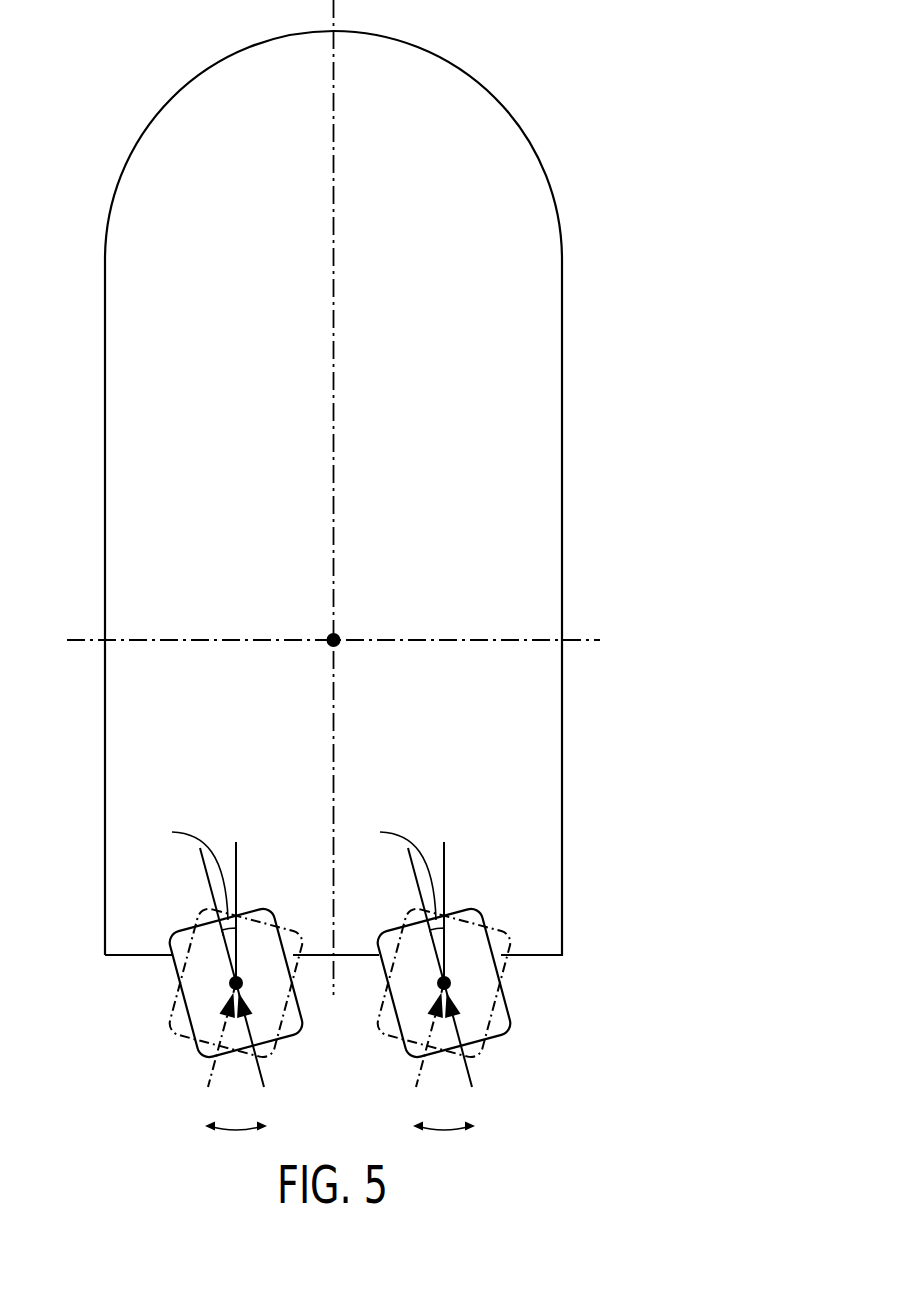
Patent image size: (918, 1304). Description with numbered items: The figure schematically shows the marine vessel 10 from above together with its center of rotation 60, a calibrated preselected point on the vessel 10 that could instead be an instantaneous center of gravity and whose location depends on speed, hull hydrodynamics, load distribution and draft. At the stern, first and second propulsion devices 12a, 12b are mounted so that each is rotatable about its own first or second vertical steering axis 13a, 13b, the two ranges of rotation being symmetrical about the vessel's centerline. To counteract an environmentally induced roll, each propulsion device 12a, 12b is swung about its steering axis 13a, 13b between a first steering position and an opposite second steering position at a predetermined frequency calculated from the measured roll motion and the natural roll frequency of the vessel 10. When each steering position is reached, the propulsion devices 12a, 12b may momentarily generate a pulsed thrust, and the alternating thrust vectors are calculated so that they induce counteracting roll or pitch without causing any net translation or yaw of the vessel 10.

The vessel 10 is at (502, 110).
The center of rotation 60 is at (338, 636).
The first propulsion device 12a is at (172, 1030).
The second propulsion device 12b is at (513, 1030).
The first vertical steering axis 13a is at (230, 983).
The second vertical steering axis 13b is at (450, 983).